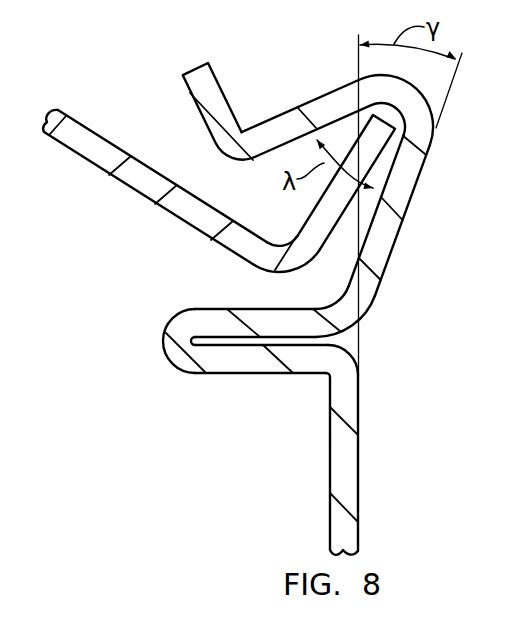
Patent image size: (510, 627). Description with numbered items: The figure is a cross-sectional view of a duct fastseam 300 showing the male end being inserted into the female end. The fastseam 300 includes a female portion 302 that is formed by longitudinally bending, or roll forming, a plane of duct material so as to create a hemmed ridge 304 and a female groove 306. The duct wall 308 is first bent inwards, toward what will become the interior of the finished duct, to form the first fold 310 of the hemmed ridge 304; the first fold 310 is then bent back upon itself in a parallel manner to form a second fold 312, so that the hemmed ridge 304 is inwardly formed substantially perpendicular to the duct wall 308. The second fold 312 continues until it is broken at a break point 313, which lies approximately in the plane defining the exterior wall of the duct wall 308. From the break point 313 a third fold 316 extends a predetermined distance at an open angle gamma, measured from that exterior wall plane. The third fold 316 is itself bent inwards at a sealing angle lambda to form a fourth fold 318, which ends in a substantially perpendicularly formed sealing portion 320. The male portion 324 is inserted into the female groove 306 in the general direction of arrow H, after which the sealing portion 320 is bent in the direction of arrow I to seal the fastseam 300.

The fastseam 300 is at (133, 362).
The female portion 302 is at (348, 406).
The hemmed ridge 304 is at (163, 339).
The female groove 306 is at (337, 254).
The duct wall 308 is at (352, 496).
The first fold 310 is at (245, 361).
The second fold 312 is at (230, 322).
The break point 313 is at (343, 318).
The third fold 316 is at (393, 216).
The fourth fold 318 is at (312, 114).
The sealing portion 320 is at (215, 95).
The male portion 324 is at (322, 204).
The arrow H is at (147, 283).
The arrow I is at (152, 162).